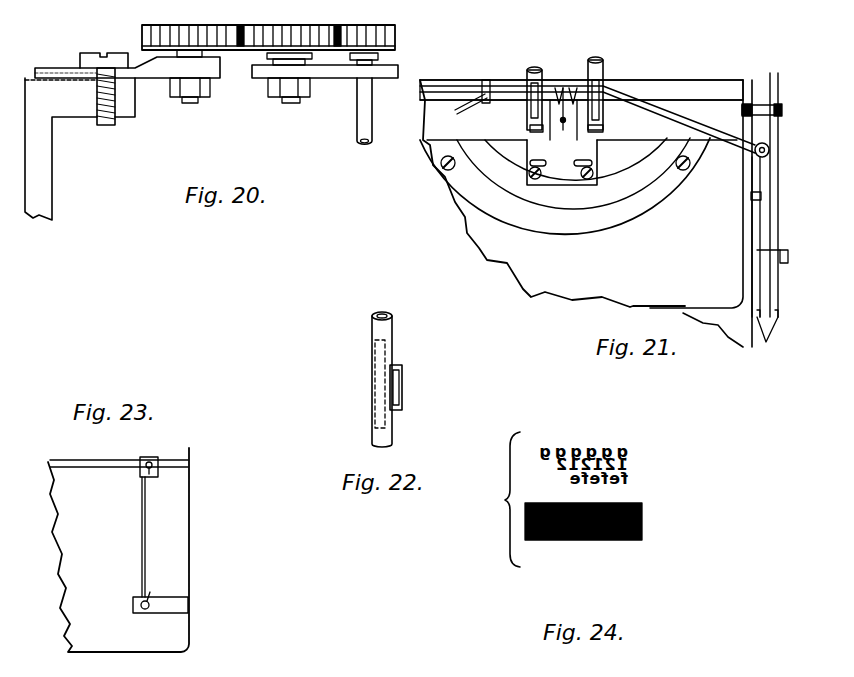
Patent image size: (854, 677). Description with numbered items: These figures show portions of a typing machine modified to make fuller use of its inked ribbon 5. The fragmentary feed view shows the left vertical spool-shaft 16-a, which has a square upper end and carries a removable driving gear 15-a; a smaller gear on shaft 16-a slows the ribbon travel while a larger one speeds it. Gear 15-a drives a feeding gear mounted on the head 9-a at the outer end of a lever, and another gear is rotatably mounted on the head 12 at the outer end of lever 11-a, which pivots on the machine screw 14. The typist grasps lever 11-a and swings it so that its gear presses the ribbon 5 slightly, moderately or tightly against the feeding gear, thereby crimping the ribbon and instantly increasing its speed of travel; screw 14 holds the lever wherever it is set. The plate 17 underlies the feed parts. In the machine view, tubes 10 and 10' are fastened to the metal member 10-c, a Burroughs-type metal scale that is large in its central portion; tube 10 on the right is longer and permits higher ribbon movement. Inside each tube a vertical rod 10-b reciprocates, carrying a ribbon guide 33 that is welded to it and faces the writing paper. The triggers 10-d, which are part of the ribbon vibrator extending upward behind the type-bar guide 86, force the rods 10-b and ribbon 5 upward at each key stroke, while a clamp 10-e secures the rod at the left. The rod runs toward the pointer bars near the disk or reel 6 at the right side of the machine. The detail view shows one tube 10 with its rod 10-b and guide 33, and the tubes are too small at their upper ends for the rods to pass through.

In FIG. 20, the lever 11-a is at (50, 67).
In FIG. 20, the head 12 is at (140, 32).
In FIG. 20, the screw 14 is at (107, 126).
In FIG. 20, the gear 15-a is at (395, 31).
In FIG. 20, the head 9-a is at (248, 50).
In FIG. 20, the plate 17 is at (337, 79).
In FIG. 20, the spool-shaft 16-a is at (360, 131).
In FIG. 21, the tube 10 is at (614, 87).
In FIG. 22, the tube 10 is at (401, 377).
In FIG. 21, the tube 10' is at (511, 90).
In FIG. 21, the rod 10-b is at (533, 108).
In FIG. 22, the rod 10-b is at (380, 353).
In FIG. 21, the metal member 10-c is at (695, 92).
In FIG. 21, the trigger 10-d is at (530, 126).
In FIG. 21, the clamp 10-e is at (487, 102).
In FIG. 21, the type-bar guide 86 is at (558, 88).
In FIG. 21, the inked ribbon 5 is at (725, 140).
In FIG. 21, the disk or reel 6 is at (769, 217).
In FIG. 22, the ribbon guide 33 is at (403, 372).